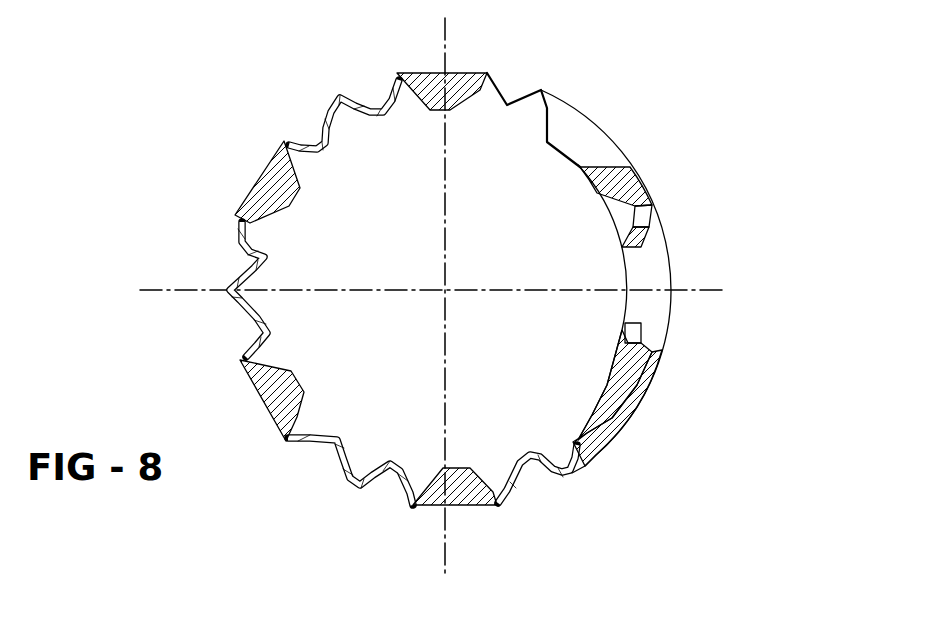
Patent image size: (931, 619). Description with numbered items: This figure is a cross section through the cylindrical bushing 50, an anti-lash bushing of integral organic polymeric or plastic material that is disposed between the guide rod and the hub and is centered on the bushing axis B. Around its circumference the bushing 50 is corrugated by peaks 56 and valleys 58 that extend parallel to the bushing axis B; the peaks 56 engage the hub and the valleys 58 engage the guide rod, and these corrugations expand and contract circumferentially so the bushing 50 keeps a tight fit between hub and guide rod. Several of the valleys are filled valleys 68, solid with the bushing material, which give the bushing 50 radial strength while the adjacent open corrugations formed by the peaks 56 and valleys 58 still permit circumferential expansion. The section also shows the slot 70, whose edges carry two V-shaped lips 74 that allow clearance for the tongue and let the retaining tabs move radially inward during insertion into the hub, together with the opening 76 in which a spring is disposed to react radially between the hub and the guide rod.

The bushing 50 is at (214, 152).
The peaks 56 is at (397, 75).
The valleys 58 is at (395, 118).
The filled valleys 68 is at (275, 184).
The slot 70 is at (642, 300).
The V-shaped lips 74 is at (622, 237).
The opening 76 is at (583, 135).
The bushing axis B is at (445, 289).